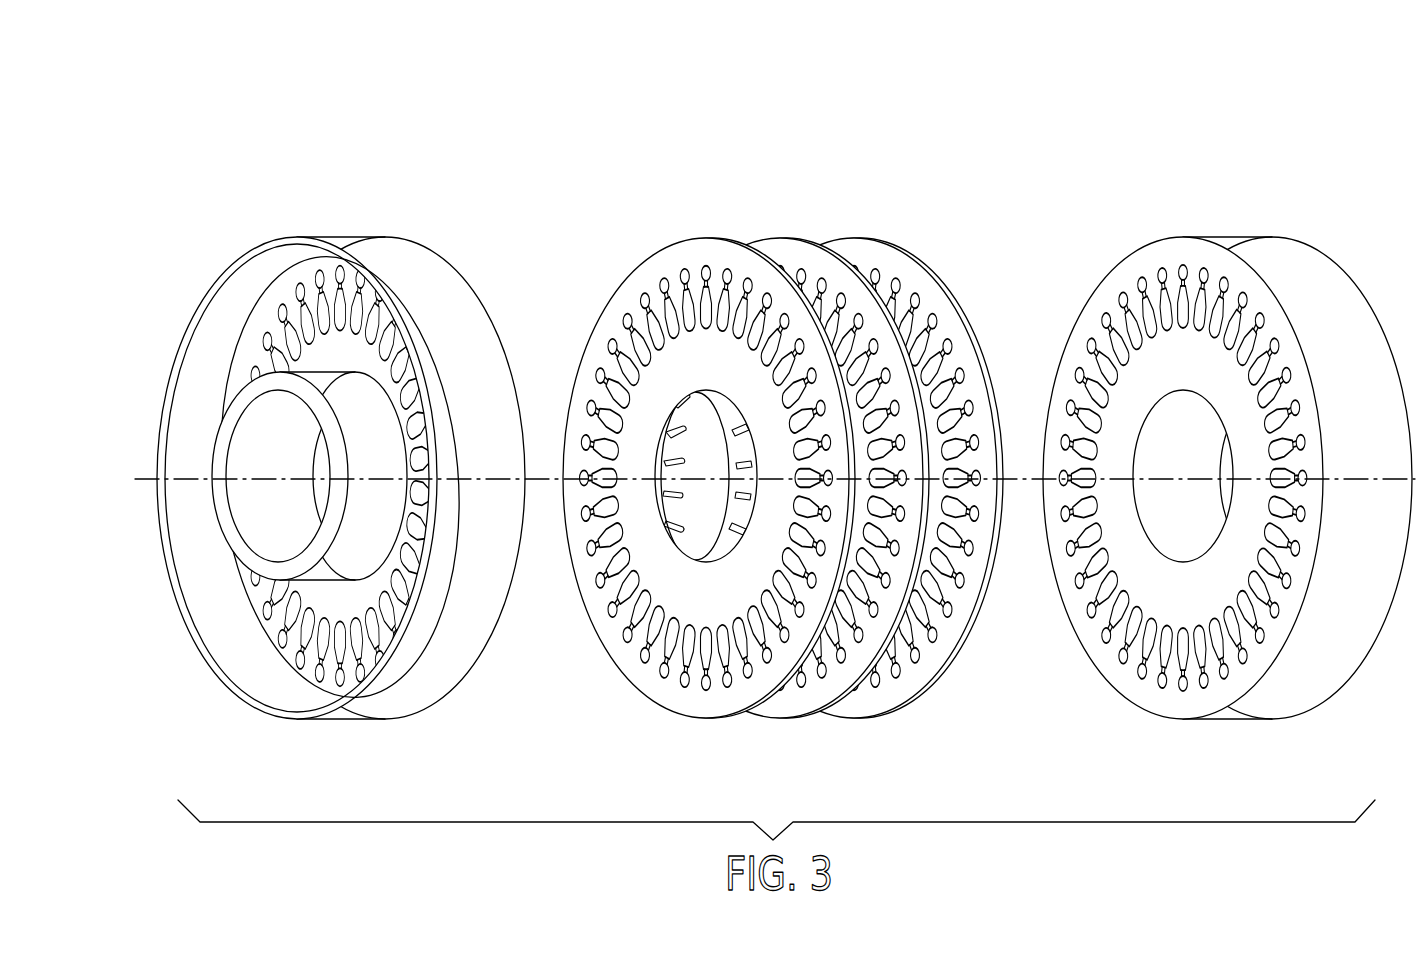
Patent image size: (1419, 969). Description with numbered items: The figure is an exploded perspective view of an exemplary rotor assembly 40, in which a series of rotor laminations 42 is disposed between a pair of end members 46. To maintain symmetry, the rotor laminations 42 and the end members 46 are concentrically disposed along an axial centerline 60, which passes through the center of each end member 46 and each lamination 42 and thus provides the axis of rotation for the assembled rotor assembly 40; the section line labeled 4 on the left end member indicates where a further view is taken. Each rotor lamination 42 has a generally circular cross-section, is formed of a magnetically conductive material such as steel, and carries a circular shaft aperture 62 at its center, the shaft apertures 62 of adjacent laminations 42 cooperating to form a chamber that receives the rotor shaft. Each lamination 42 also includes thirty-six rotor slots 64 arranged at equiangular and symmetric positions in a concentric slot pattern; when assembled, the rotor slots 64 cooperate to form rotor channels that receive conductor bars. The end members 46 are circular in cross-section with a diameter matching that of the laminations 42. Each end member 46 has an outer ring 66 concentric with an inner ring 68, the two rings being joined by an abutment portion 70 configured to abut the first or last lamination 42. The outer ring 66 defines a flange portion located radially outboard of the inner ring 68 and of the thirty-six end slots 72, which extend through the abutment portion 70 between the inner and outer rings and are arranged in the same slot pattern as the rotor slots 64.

The rotor assembly 40 is at (774, 98).
The rotor laminations 42 is at (791, 436).
The end members 46 is at (438, 226).
The axial centerline 60 is at (148, 470).
The shaft aperture 62 is at (710, 420).
The rotor slots 64 is at (912, 298).
The outer ring 66 is at (438, 311).
The inner ring 68 is at (265, 568).
The abutment portion 70 is at (397, 587).
The end slots 72 is at (352, 288).
The section line 4- 4 is at (320, 232).